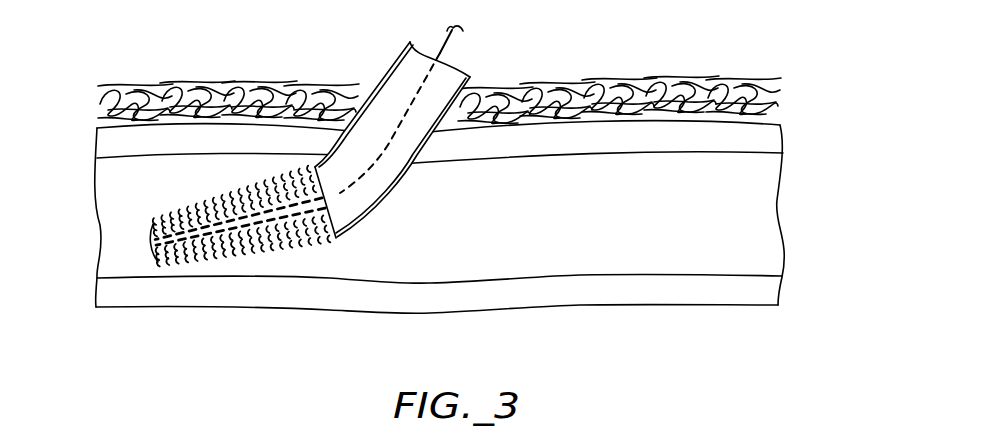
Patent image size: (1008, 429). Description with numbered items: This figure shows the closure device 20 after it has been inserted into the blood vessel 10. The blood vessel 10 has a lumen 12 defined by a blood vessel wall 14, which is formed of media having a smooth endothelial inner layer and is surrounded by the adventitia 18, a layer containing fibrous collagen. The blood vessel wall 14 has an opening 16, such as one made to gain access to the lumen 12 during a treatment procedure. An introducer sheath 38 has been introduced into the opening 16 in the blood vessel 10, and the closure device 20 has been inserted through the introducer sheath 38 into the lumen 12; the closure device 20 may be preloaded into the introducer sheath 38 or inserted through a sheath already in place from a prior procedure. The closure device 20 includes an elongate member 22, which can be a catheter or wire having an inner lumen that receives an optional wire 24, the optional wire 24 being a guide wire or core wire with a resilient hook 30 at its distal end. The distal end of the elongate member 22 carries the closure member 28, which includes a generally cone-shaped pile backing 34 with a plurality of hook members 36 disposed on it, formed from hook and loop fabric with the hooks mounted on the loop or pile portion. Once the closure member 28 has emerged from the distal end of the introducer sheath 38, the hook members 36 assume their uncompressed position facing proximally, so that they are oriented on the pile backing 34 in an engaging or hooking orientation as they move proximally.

The blood vessel 10 is at (807, 141).
The lumen 12 is at (657, 213).
The blood vessel wall 14 is at (773, 150).
The opening 16 is at (408, 160).
The adventitia 18 is at (593, 86).
The closure device 20 is at (329, 143).
The elongate member 22 is at (377, 193).
The optional wire 24 is at (447, 47).
The closure member 28 is at (247, 219).
The resilient hook 30 is at (152, 243).
The pile backing 34 is at (297, 242).
The hook members 36 is at (328, 242).
The introducer sheath 38 is at (474, 84).